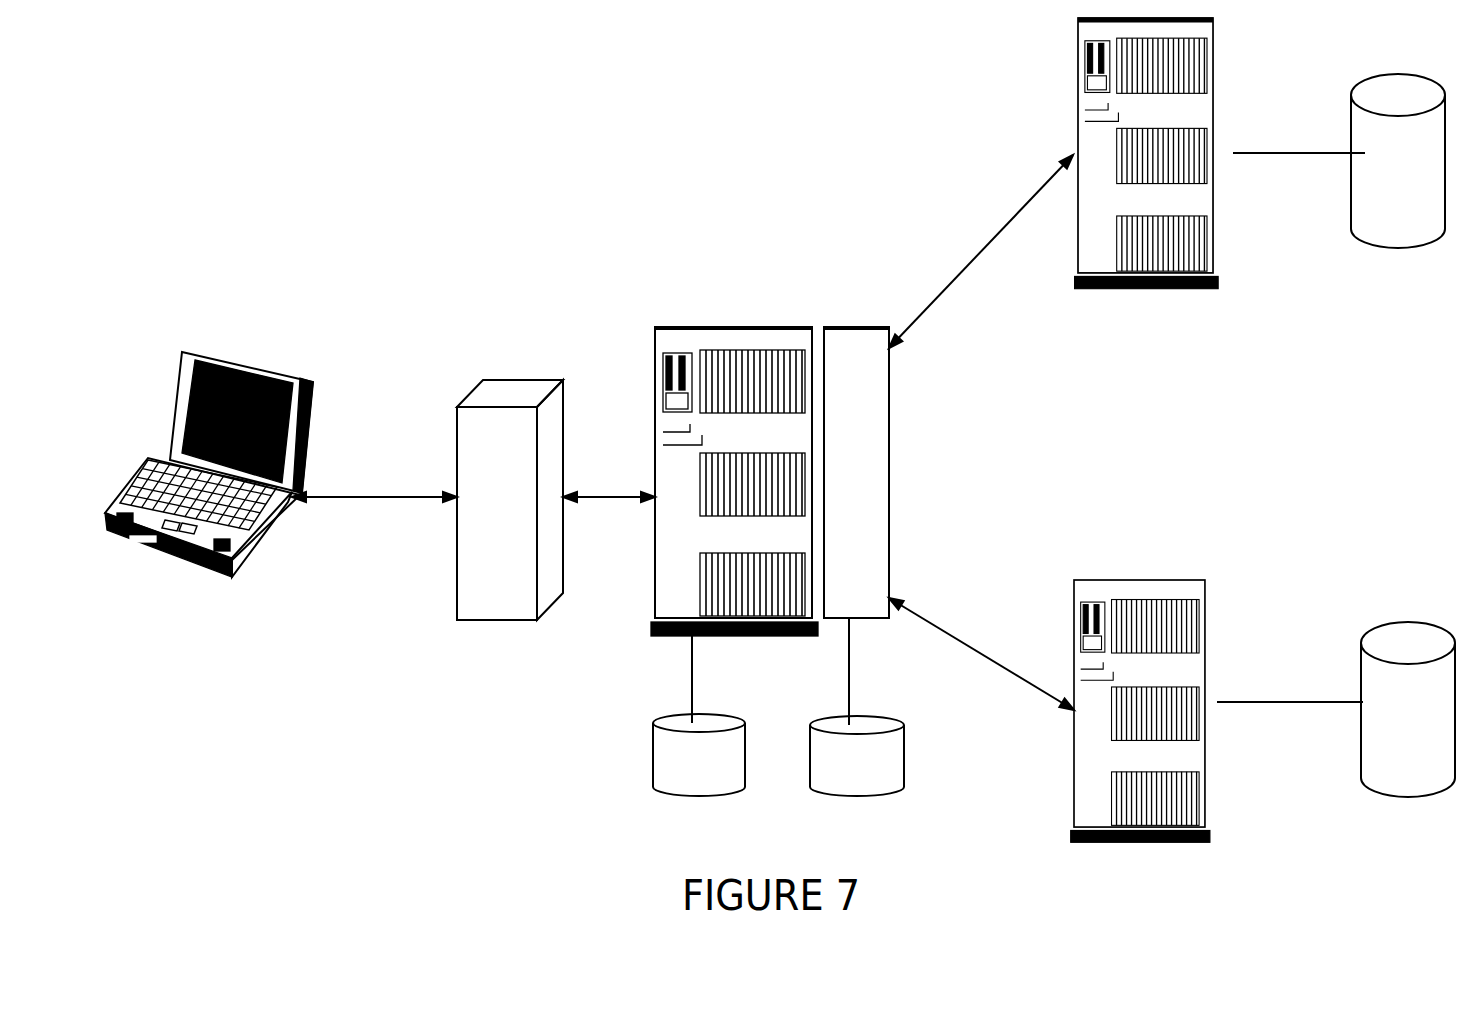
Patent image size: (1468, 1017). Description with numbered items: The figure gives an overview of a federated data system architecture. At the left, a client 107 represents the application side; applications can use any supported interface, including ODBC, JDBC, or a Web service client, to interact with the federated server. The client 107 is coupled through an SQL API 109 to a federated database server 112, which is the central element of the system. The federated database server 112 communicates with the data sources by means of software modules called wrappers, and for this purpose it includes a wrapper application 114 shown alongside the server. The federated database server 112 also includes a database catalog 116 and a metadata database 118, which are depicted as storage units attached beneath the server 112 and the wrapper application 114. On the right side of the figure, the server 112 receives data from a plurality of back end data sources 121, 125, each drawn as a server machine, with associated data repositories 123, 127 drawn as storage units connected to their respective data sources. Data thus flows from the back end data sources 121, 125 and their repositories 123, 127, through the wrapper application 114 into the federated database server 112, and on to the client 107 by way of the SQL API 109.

The client 107 is at (260, 365).
The SQL API 109 is at (537, 395).
The federated database server 112 is at (735, 327).
The wrapper application 114 is at (840, 327).
The database catalog 116 is at (732, 795).
The metadata database 118 is at (823, 795).
The back end data source 121 is at (1153, 287).
The data repository 123 is at (1380, 247).
The back end data source 125 is at (1138, 580).
The data repository 127 is at (1400, 620).